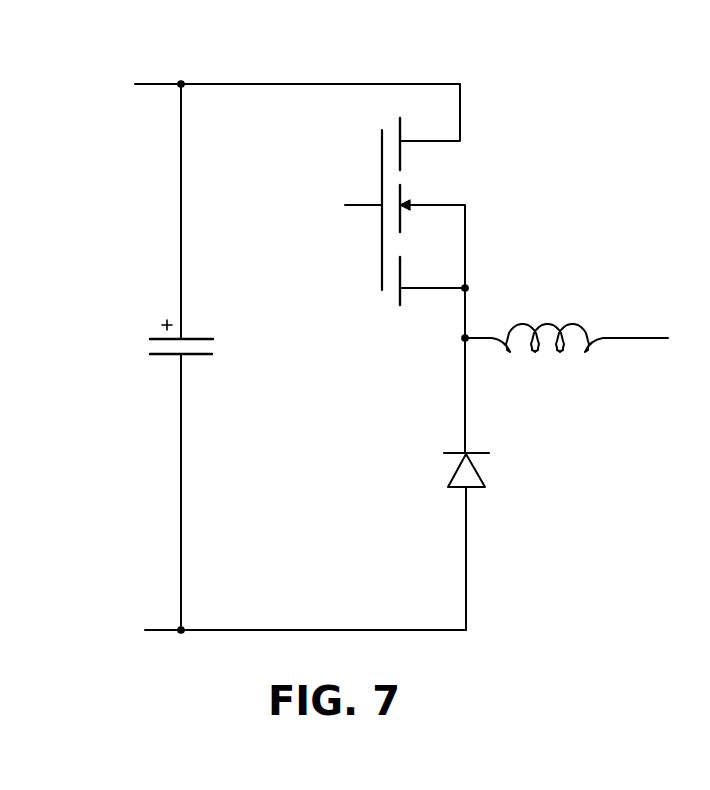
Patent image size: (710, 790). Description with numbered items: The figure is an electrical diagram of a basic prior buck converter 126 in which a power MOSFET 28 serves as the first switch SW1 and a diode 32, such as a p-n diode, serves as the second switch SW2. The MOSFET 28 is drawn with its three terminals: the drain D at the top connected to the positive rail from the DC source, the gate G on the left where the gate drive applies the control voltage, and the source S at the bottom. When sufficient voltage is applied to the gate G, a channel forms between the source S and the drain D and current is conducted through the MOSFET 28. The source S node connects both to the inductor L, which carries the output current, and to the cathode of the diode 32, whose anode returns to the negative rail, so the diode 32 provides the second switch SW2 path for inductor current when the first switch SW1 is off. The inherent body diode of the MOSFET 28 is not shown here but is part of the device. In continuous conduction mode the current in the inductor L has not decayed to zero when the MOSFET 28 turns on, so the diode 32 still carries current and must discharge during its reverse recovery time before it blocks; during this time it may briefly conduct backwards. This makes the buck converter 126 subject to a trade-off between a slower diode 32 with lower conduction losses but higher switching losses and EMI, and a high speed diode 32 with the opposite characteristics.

The buck converter 126 is at (86, 117).
The power MOSFET 28 is at (433, 192).
The first switch SW1 is at (480, 198).
The second switch SW2 is at (488, 512).
The diode 32 is at (497, 540).
The inductor L is at (560, 312).
The drain D is at (457, 121).
The gate G is at (350, 195).
The source S is at (455, 303).